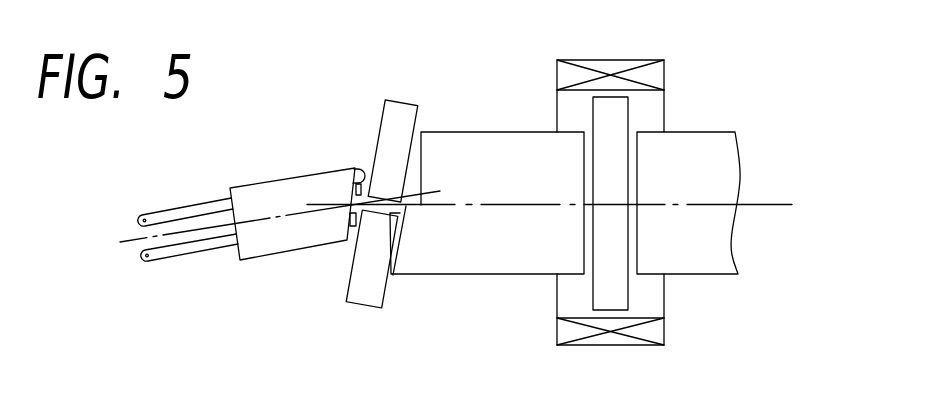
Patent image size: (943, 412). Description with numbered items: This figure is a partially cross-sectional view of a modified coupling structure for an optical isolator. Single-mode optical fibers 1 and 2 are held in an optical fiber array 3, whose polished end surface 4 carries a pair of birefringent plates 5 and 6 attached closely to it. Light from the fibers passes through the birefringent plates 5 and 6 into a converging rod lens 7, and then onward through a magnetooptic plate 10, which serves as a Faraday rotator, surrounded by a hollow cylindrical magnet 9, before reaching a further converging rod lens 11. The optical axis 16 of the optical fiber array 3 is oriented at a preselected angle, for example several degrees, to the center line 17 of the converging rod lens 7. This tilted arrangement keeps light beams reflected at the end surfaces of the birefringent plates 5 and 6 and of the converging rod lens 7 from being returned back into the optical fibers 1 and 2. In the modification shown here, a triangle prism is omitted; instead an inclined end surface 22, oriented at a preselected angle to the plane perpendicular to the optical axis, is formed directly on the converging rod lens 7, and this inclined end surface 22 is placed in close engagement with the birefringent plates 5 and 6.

The single-mode optical fiber 1 is at (195, 205).
The single-mode optical fiber 2 is at (195, 251).
The optical fiber array 3 is at (293, 192).
The polished end surface 4 is at (353, 175).
The birefringent plate 5 is at (405, 122).
The birefringent plate 6 is at (368, 283).
The converging rod lens 7 is at (515, 157).
The hollow cylindrical magnet 9 is at (656, 327).
The magnetooptic plate 10 is at (613, 117).
The converging rod lens 11 is at (720, 148).
The optical axis 16 is at (302, 215).
The center line 17 is at (497, 204).
The inclined end surface 22 is at (402, 240).